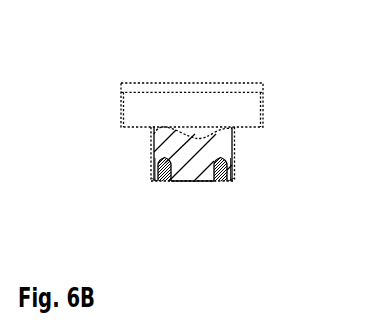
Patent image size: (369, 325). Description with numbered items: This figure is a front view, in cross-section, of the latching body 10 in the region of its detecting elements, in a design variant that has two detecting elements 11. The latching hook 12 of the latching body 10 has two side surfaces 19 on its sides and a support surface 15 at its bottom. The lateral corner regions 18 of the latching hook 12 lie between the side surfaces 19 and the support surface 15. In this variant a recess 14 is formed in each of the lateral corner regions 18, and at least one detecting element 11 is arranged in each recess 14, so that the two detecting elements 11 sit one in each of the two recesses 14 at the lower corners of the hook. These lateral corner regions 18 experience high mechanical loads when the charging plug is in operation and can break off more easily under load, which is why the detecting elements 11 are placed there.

The latching body 10 is at (113, 34).
The detecting element 11 is at (163, 180).
The latching hook 12 is at (194, 131).
The recess 14 is at (157, 172).
The support surface 15 is at (194, 182).
The lateral corner region 18 is at (155, 180).
The side surface 19 is at (152, 142).